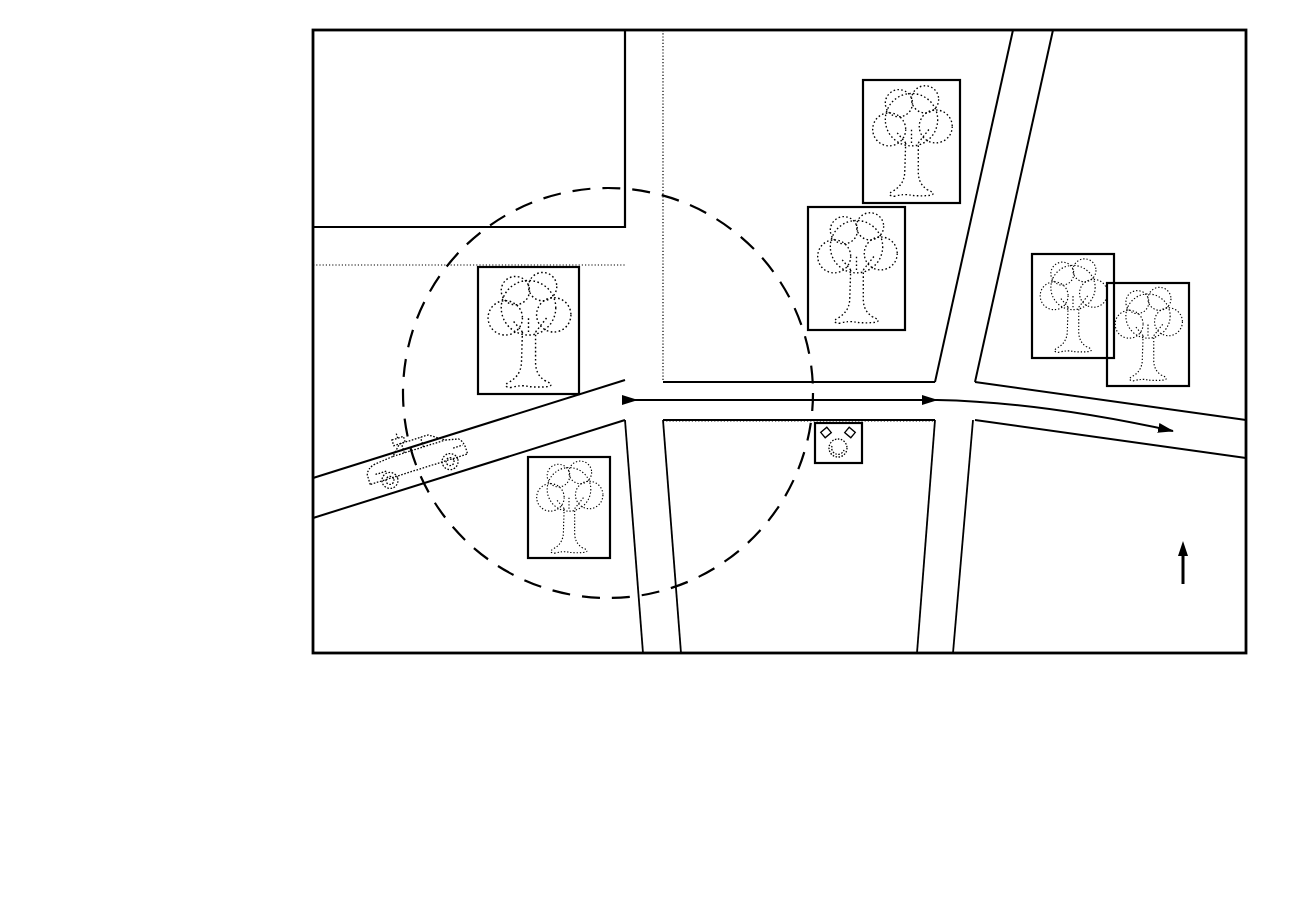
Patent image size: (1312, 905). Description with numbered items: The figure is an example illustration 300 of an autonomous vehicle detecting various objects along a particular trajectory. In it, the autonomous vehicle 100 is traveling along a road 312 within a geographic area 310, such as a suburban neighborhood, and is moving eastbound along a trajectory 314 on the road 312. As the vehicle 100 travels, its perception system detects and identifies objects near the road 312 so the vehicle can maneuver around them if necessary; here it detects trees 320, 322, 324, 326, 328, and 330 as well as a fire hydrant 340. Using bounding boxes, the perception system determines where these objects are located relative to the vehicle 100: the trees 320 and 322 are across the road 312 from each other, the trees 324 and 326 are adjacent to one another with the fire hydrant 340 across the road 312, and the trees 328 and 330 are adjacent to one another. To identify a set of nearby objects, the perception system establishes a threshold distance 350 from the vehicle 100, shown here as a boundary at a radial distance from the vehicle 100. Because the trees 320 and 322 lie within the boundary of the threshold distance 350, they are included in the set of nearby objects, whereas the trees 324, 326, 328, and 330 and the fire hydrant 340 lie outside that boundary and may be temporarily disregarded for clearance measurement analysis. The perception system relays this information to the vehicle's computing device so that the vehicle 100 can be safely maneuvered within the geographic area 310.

The autonomous vehicle 100 is at (372, 478).
The example illustration 300 is at (234, 697).
The geographic area 310 is at (313, 78).
The road 312 is at (683, 341).
The trajectory 314 is at (1091, 420).
The tree 320 is at (579, 297).
The tree 322 is at (610, 493).
The tree 324 is at (960, 143).
The tree 326 is at (905, 245).
The tree 328 is at (1073, 295).
The tree 330 is at (1189, 315).
The fire hydrant 340 is at (838, 456).
The threshold distance 350 is at (500, 212).